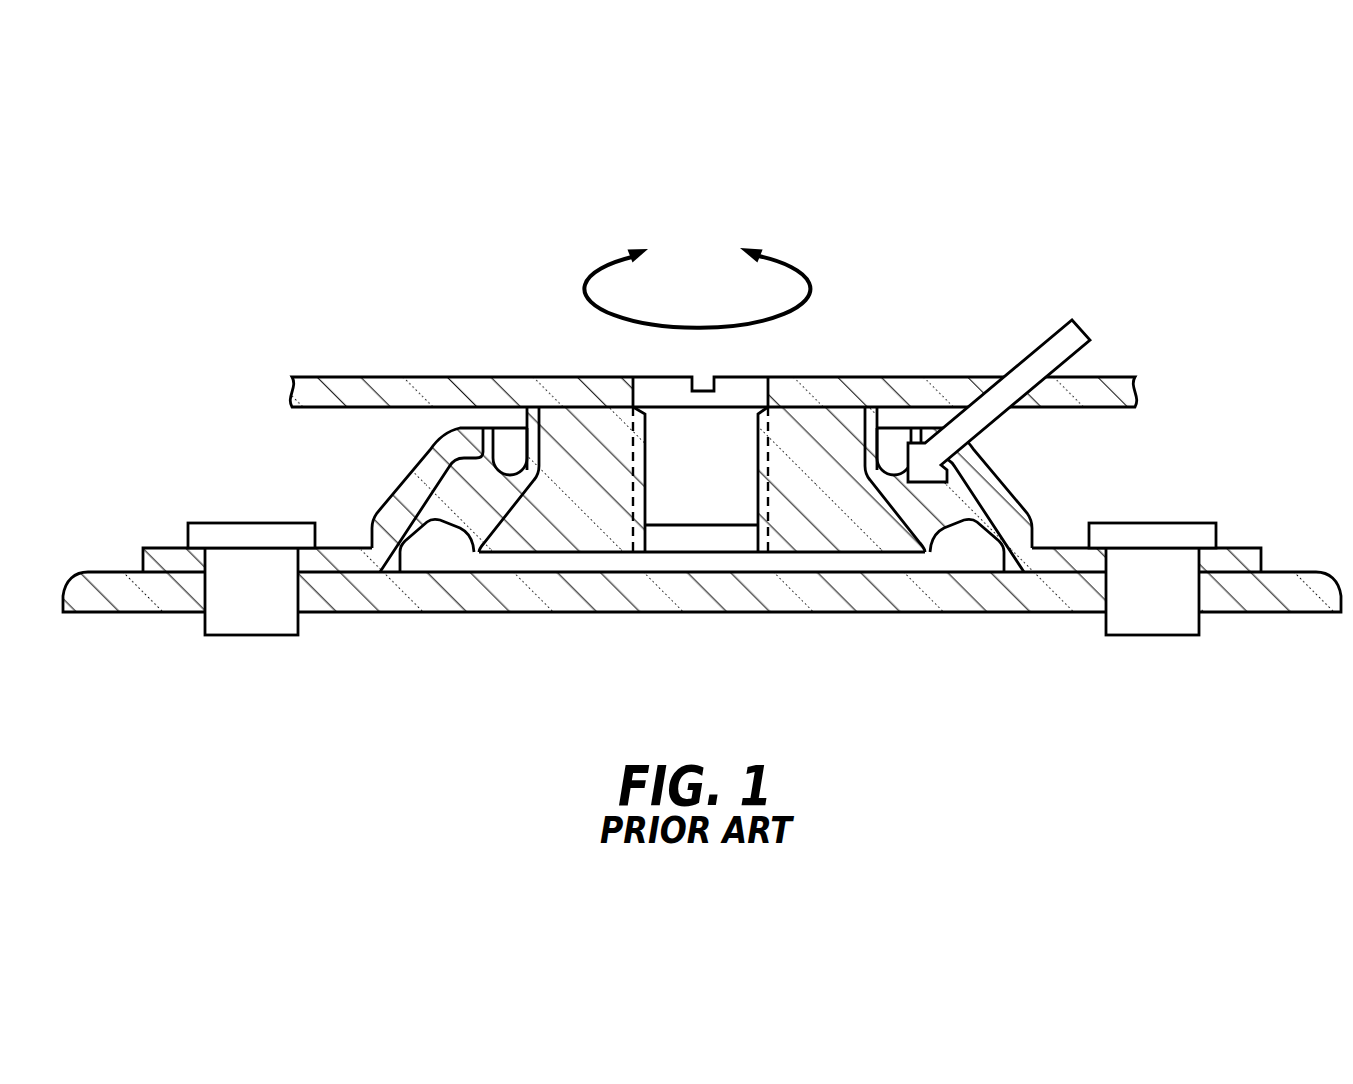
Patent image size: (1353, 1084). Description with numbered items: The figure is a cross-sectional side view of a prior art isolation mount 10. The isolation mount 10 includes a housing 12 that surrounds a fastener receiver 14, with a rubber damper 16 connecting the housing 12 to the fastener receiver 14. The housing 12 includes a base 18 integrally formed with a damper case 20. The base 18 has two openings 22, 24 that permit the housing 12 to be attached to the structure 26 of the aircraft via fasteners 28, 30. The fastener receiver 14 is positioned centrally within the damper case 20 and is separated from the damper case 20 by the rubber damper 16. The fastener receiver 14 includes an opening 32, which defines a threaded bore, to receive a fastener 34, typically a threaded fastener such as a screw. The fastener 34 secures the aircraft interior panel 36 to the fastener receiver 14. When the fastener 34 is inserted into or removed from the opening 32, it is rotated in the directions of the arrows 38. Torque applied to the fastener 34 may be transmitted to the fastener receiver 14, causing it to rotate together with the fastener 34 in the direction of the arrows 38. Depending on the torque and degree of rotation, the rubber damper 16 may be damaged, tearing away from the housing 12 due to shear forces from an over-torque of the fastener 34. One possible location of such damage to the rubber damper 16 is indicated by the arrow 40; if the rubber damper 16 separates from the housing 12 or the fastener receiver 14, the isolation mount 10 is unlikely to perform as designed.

The isolation mount 10 is at (867, 208).
The housing 12 is at (320, 463).
The fastener receiver 14 is at (535, 567).
The rubber damper 16 is at (432, 562).
The base 18 is at (1258, 548).
The damper case 20 is at (1010, 489).
The opening 22 is at (200, 593).
The opening 24 is at (1200, 597).
The structure 26 is at (707, 614).
The fastener 28 is at (256, 618).
The fastener 30 is at (1147, 620).
The opening 32 is at (762, 470).
The fastener 34 is at (650, 385).
The aircraft interior panel 36 is at (488, 377).
The arrows 38 is at (613, 262).
The arrow 40 is at (1063, 330).